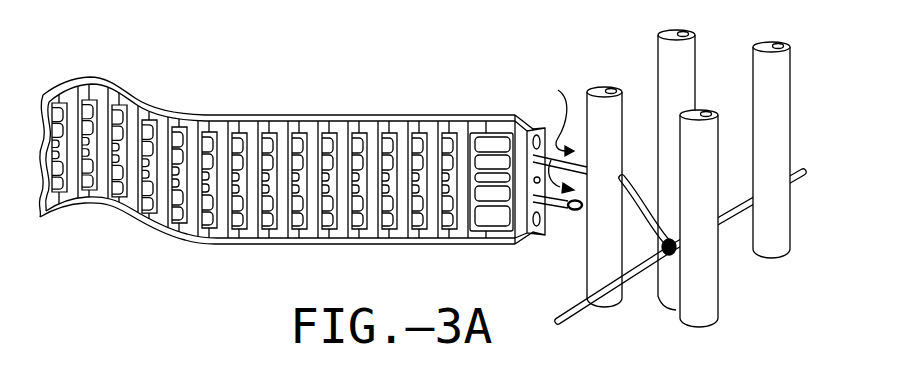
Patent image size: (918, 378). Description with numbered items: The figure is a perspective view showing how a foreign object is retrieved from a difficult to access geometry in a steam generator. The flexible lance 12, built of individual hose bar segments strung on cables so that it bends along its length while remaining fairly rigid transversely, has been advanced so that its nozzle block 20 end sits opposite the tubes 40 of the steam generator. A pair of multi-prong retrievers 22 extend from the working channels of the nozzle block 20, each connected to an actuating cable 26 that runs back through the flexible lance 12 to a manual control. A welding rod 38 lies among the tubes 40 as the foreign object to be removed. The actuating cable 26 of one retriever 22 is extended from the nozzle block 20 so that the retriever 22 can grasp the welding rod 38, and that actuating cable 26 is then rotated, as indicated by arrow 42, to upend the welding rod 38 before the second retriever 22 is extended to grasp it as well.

The flexible lance 12 is at (215, 82).
The nozzle block 20 is at (517, 143).
The multi-prong retrievers 22 is at (572, 210).
The actuating cable 26 is at (635, 176).
The welding rod 38 is at (583, 323).
The tubes 40 is at (593, 110).
The arrow 42 is at (549, 137).